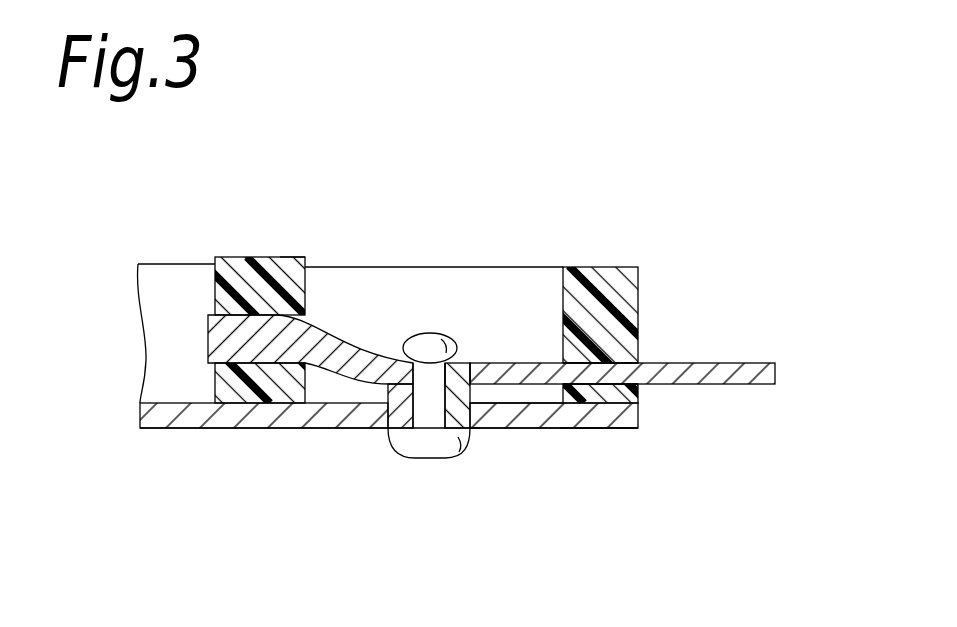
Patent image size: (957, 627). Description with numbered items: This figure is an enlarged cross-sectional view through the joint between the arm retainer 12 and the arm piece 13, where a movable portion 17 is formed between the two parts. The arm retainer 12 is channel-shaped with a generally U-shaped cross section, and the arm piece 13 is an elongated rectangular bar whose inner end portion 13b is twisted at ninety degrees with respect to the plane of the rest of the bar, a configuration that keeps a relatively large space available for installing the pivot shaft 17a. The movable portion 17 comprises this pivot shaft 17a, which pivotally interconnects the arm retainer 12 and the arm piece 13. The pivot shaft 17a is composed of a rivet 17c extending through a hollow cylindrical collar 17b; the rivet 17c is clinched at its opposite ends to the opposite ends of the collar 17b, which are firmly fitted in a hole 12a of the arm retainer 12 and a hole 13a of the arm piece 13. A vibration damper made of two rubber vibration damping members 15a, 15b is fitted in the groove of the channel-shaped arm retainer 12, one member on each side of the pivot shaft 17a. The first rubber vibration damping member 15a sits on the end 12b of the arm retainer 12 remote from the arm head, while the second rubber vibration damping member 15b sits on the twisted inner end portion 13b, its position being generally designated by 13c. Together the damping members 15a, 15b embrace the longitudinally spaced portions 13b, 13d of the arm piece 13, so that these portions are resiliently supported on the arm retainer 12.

The arm retainer 12 is at (173, 417).
The hole of the arm retainer 12a is at (473, 412).
The end of the arm retainer 12b is at (605, 442).
The arm piece 13 is at (713, 363).
The hole of the arm piece 13a is at (477, 363).
The inner end portion of the arm piece 13b is at (207, 338).
The position of the second rubber vibration damping member 13c is at (300, 252).
The portion of the arm piece 13d is at (637, 367).
The first rubber vibration damping member 15a is at (615, 285).
The second rubber vibration damping member 15b is at (243, 258).
The movable portion 17 is at (385, 467).
The pivot shaft 17a is at (480, 527).
The hollow cylindrical collar 17b is at (385, 415).
The rivet 17c is at (416, 440).